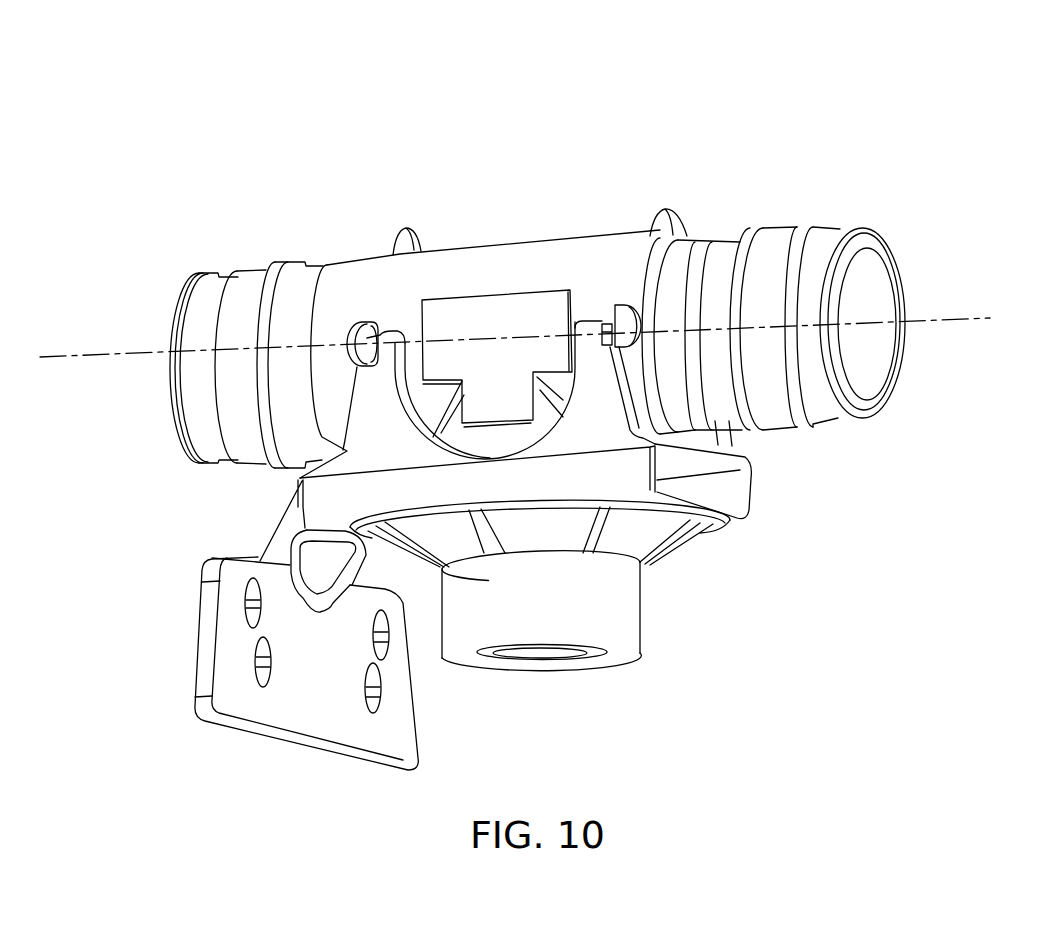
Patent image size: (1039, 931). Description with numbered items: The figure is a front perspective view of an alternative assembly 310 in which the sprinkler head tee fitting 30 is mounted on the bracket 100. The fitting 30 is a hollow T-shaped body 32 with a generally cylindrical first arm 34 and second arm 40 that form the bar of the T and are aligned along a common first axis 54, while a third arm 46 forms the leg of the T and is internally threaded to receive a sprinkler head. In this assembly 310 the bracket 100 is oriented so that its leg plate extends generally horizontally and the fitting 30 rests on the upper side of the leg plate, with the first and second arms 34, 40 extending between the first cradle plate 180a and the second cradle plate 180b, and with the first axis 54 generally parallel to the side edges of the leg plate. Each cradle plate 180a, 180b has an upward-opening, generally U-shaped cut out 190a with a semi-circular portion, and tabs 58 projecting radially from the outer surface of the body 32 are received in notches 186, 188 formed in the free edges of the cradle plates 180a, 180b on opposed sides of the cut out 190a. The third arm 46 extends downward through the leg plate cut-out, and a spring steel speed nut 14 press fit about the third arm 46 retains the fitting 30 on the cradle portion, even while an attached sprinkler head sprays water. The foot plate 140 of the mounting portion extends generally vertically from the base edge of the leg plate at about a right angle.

The alternative assembly 310 is at (213, 125).
The sprinkler head tee fitting 30 is at (833, 164).
The T-shaped body 32 is at (513, 244).
The first arm 34 is at (258, 272).
The second arm 40 is at (789, 242).
The first axis 54 is at (947, 318).
The tabs 58 is at (352, 330).
The notch 186 is at (607, 320).
The notch 188 is at (360, 322).
The cut out 190a is at (412, 413).
The first cradle plate 180a is at (612, 440).
The second cradle plate 180b is at (707, 445).
The bracket 100 is at (187, 526).
The foot plate 140 is at (338, 669).
The speed nut 14 is at (547, 540).
The third arm 46 is at (570, 608).